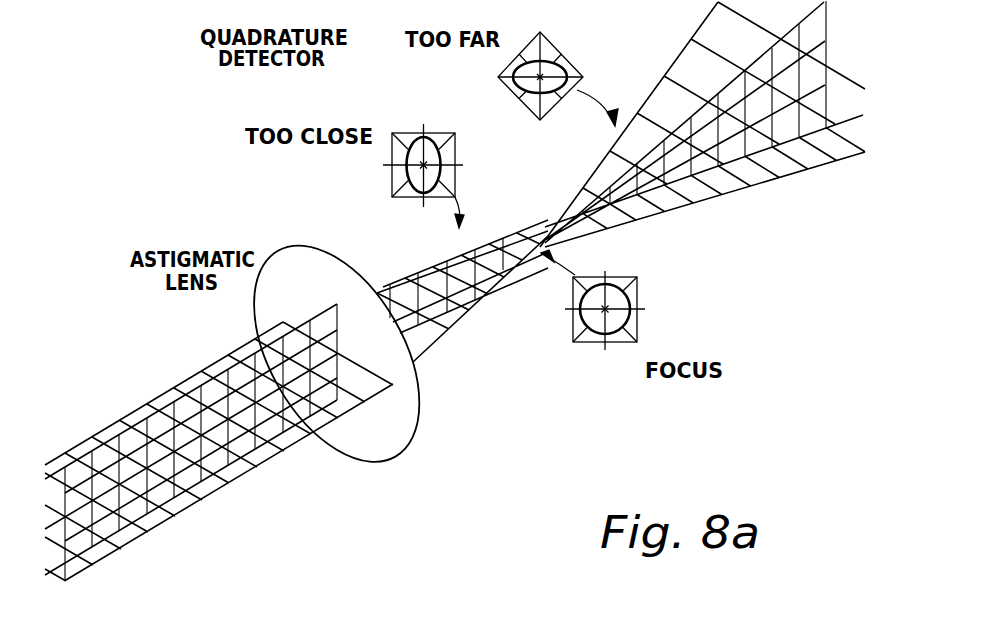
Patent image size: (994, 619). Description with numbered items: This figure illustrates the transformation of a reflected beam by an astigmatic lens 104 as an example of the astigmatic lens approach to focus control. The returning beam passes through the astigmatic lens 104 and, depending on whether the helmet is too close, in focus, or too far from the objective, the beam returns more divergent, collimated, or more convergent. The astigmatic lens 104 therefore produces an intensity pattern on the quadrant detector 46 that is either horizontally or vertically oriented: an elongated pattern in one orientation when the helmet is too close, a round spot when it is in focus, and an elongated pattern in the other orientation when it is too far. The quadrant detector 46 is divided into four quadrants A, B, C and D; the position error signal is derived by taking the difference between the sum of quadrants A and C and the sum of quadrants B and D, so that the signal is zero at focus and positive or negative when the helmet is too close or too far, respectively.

The quadrant detector 46 is at (392, 197).
The astigmatic lens 104 is at (422, 404).
The detector quadrant A is at (512, 160).
The detector quadrant B is at (542, 194).
The detector quadrant C is at (513, 224).
The detector quadrant D is at (485, 194).